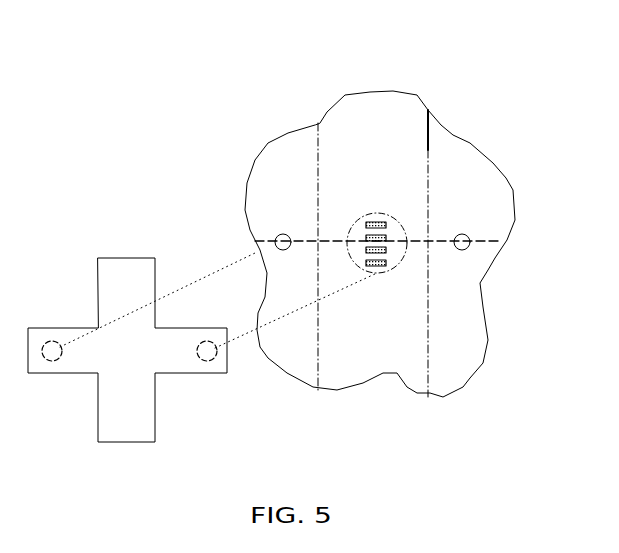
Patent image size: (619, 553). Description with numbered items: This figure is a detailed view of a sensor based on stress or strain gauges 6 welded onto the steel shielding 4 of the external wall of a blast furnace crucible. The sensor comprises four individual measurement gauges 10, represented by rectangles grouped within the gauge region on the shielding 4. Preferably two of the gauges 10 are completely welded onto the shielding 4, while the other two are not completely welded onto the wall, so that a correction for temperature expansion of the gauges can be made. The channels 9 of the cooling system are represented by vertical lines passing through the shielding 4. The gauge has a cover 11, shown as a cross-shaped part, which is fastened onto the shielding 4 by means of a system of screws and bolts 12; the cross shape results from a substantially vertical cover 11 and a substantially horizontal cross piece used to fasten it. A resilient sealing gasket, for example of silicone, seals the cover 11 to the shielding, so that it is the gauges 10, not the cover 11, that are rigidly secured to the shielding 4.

The steel shielding 4 is at (378, 302).
The stress or strain gauges 6 is at (406, 245).
The channels of the cooling system 9 is at (315, 342).
The individual measurement gauges 10 is at (367, 249).
The cover 11 is at (127, 400).
The system of screws and bolts 12 is at (472, 237).